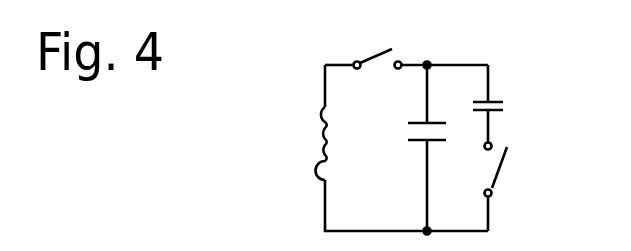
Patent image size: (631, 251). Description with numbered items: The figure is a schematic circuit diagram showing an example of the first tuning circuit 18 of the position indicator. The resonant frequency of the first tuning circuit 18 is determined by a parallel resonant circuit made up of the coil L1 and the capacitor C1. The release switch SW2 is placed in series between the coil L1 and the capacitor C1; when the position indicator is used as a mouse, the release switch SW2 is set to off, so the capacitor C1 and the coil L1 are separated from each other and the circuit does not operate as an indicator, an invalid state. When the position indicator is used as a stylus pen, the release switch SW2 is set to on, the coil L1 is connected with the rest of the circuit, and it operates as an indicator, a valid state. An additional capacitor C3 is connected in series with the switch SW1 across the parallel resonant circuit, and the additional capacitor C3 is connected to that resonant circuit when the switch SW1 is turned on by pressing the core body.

The first tuning circuit 18 is at (271, 73).
The release switch SW2 is at (391, 42).
The switch SW1 is at (528, 187).
The capacitor C1 is at (435, 148).
The additional capacitor C3 is at (508, 103).
The coil L1 is at (343, 143).